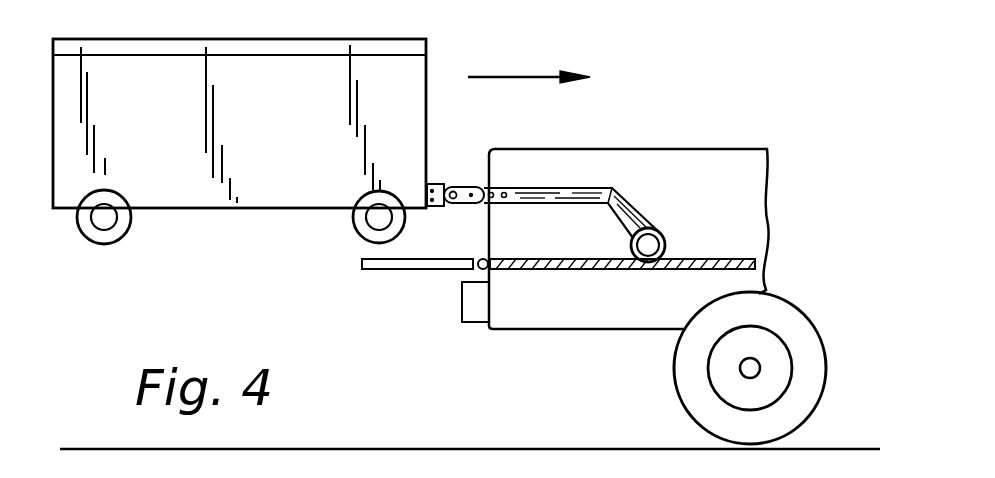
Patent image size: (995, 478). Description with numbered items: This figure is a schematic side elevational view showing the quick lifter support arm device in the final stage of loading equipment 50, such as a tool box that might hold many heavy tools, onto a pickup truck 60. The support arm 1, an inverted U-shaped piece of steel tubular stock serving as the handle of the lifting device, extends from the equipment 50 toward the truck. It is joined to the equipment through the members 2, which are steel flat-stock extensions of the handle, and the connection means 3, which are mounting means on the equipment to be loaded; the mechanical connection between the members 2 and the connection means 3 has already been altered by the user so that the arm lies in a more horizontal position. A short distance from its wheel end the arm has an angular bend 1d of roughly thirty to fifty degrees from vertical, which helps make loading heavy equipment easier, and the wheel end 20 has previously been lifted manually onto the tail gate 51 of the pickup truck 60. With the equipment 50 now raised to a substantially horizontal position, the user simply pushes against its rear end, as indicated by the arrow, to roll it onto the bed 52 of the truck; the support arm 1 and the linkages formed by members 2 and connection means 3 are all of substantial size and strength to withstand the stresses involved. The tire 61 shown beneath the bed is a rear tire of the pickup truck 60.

The equipment 50 is at (272, 131).
The connection means 3 is at (444, 184).
The members 2 is at (472, 199).
The support arm 1 is at (579, 187).
The angular bend 1d is at (613, 188).
The wheel end 20 is at (665, 244).
The pickup truck 60 is at (731, 194).
The tail gate 51 is at (406, 269).
The bed 52 is at (631, 269).
The tire 61 is at (691, 384).